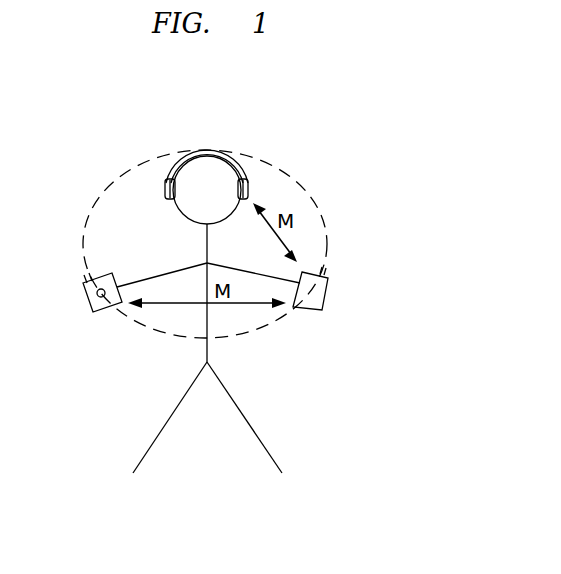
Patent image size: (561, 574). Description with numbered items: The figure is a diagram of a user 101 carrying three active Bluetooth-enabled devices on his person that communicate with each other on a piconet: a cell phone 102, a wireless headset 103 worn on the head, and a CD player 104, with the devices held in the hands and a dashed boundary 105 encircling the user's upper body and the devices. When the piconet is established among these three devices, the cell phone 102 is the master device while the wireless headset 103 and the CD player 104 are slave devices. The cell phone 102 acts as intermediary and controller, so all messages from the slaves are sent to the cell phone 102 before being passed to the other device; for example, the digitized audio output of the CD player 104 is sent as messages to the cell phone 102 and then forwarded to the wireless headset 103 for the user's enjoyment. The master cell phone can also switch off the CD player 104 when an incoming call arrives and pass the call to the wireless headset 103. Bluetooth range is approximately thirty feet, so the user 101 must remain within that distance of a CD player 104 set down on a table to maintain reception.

The user 101 is at (254, 364).
The cell phone 102 is at (307, 312).
The wireless headset 103 is at (238, 153).
The CD player 104 is at (88, 313).
The motion region boundary 105 is at (306, 183).